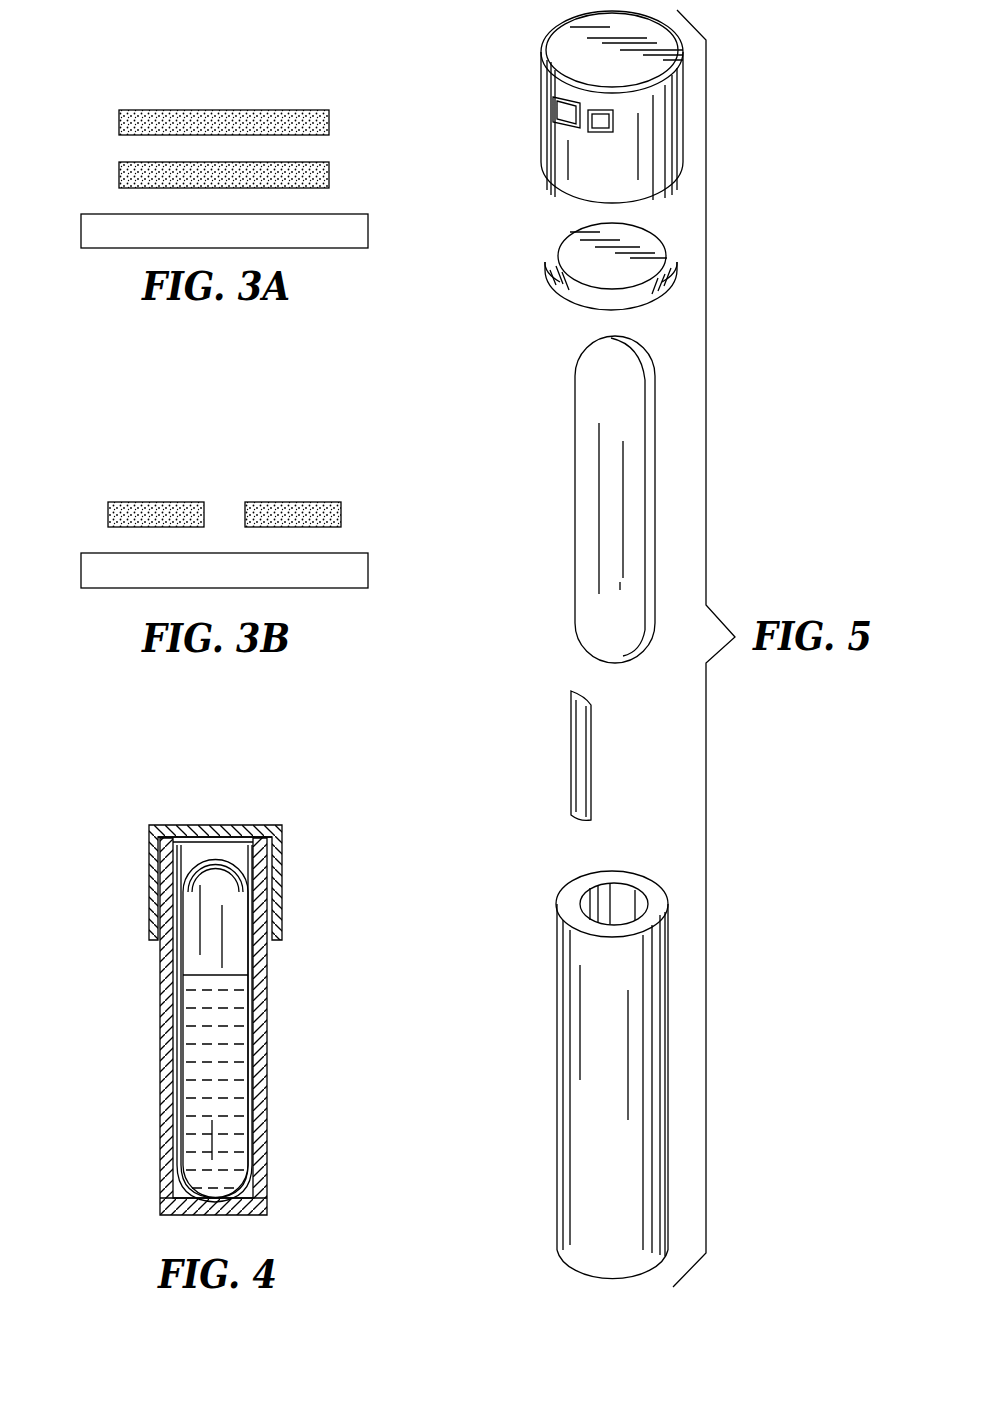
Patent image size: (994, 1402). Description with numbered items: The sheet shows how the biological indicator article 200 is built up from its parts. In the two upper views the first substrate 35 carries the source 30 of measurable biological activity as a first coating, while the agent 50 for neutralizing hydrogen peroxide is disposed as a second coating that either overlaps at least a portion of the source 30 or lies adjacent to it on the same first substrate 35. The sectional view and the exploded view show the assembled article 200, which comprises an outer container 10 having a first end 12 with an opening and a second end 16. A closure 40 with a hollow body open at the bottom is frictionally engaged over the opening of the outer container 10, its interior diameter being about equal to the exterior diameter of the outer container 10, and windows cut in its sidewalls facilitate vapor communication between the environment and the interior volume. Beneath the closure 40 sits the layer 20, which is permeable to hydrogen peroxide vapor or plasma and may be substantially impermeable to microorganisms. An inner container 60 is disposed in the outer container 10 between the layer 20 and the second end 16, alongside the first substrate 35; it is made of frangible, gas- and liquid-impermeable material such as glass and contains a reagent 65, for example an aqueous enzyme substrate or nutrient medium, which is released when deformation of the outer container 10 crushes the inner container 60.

In FIG. 4, the outer container 10 is at (160, 1000).
In FIG. 5, the first end 12 is at (592, 1092).
In FIG. 4, the second end 16 is at (268, 1210).
In FIG. 5, the second end 16 is at (603, 1282).
In FIG. 4, the layer 20 is at (150, 838).
In FIG. 5, the layer 20 is at (577, 247).
In FIG. 3A, the source of measurable biological activity 30 is at (329, 175).
In FIG. 3B, the source of measurable biological activity 30 is at (341, 514).
In FIG. 5, the source of measurable biological activity 30 is at (573, 741).
In FIG. 3A, the first substrate 35 is at (368, 232).
In FIG. 3B, the first substrate 35 is at (368, 572).
In FIG. 4, the first substrate 35 is at (176, 1108).
In FIG. 4, the closure 40 is at (283, 873).
In FIG. 5, the closure 40 is at (548, 40).
In FIG. 3A, the agent 50 is at (119, 122).
In FIG. 3B, the agent 50 is at (108, 514).
In FIG. 4, the inner container 60 is at (249, 1093).
In FIG. 5, the inner container 60 is at (593, 411).
In FIG. 4, the reagent 65 is at (215, 1030).
In FIG. 4, the article 200 is at (135, 1171).
In FIG. 5, the article 200 is at (528, 1176).